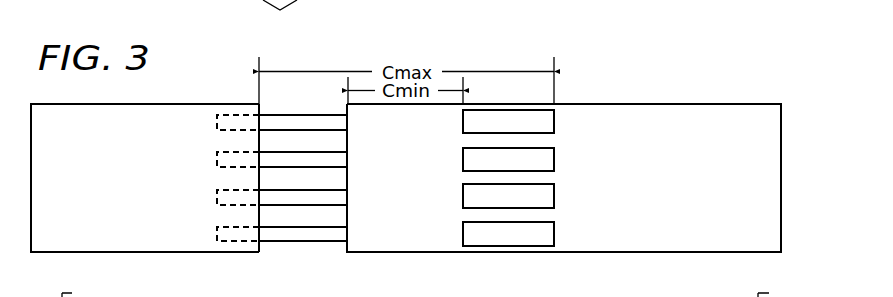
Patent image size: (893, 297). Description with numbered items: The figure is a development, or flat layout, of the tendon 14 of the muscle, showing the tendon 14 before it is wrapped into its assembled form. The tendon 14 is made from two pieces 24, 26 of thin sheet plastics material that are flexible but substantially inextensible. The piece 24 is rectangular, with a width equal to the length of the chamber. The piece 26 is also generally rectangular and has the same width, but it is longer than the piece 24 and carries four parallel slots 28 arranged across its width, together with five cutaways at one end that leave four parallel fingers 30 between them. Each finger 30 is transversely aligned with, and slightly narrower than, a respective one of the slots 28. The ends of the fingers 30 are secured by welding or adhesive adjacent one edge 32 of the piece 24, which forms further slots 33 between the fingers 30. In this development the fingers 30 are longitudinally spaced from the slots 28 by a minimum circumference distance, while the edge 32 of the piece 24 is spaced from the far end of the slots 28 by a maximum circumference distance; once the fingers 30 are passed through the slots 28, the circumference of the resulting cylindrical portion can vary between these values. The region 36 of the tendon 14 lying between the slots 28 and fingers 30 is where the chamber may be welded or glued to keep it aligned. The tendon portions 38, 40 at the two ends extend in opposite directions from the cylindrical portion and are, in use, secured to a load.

The tendon 14 is at (406, 126).
The piece 24 is at (171, 85).
The piece 26 is at (671, 80).
The slots 28 is at (522, 232).
The fingers 30 is at (305, 236).
The edge 32 is at (260, 143).
The further slots 33 is at (328, 140).
The region 36 is at (407, 207).
The tendon portion 38 is at (133, 227).
The tendon portion 40 is at (706, 228).